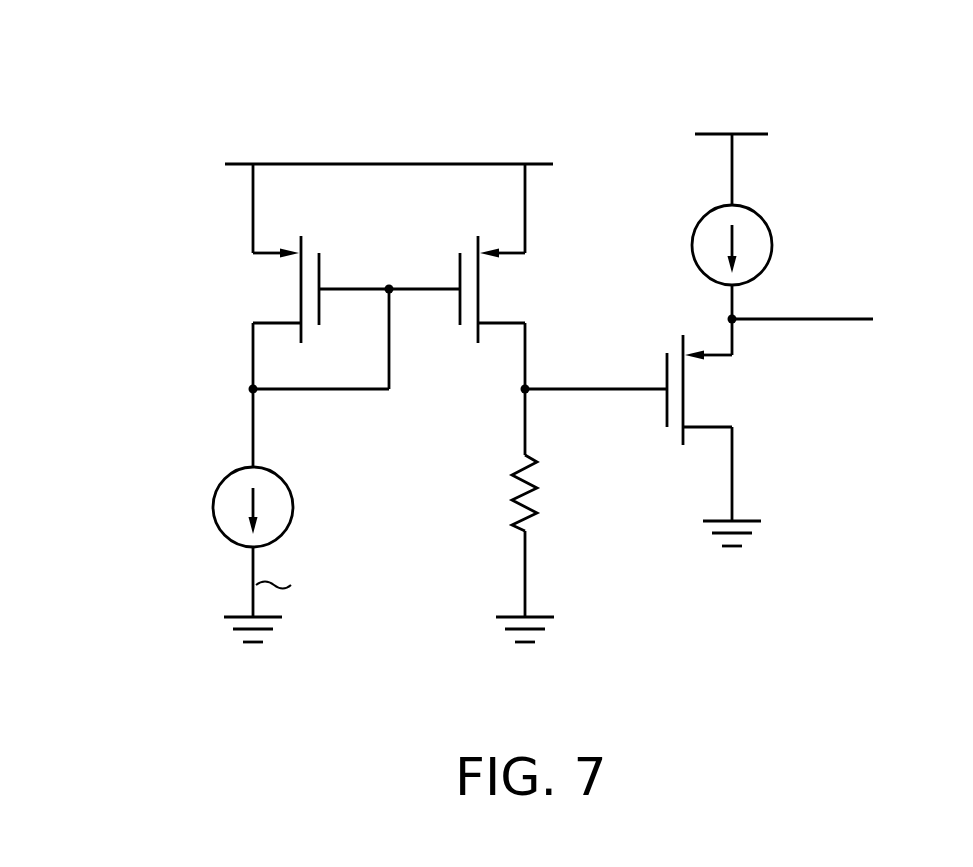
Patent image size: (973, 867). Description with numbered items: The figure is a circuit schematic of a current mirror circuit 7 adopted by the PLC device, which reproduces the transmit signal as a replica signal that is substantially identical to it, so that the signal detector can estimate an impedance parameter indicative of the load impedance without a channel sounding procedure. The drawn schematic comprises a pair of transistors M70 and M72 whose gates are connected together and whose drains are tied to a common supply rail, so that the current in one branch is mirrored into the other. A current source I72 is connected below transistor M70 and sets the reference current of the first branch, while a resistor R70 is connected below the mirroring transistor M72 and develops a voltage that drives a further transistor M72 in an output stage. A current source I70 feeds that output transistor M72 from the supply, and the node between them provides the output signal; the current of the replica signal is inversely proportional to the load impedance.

The current mirror circuit 7 is at (878, 93).
The transistor M70 is at (255, 287).
The transistor M72 is at (524, 290).
The current source I70 is at (773, 246).
The current source I72 is at (293, 509).
The resistor R70 is at (545, 491).